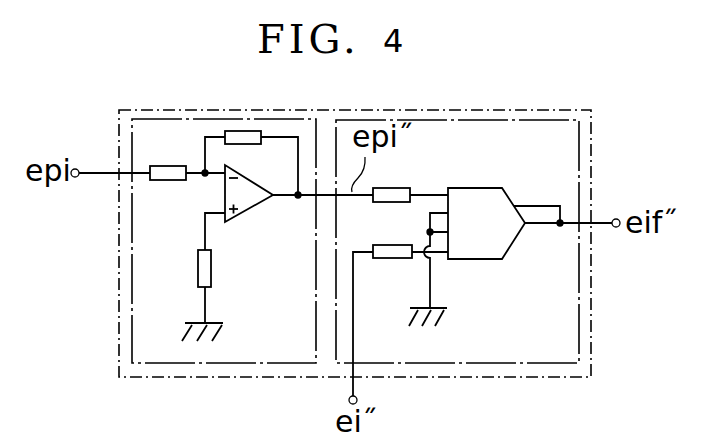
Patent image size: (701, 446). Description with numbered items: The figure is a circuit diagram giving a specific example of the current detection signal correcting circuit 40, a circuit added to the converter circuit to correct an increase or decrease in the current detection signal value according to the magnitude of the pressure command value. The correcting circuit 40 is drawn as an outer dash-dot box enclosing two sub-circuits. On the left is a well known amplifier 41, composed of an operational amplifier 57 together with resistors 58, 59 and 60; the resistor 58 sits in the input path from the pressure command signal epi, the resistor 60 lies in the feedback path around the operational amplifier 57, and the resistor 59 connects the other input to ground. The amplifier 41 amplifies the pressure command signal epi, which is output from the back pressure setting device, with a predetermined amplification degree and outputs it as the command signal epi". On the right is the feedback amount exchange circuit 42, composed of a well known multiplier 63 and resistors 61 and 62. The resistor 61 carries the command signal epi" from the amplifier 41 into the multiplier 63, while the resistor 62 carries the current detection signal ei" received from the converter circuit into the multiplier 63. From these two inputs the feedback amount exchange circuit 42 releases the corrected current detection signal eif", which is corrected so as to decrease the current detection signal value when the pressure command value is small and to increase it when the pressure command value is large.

The current detection signal correcting circuit 40 is at (423, 109).
The amplifier 41 is at (142, 336).
The feedback amount exchange circuit 42 is at (557, 332).
The operational amplifier 57 is at (250, 207).
The resistor 58 is at (168, 180).
The resistor 59 is at (210, 272).
The resistor 60 is at (249, 144).
The resistor 61 is at (398, 190).
The resistor 62 is at (392, 258).
The multiplier 63 is at (483, 197).